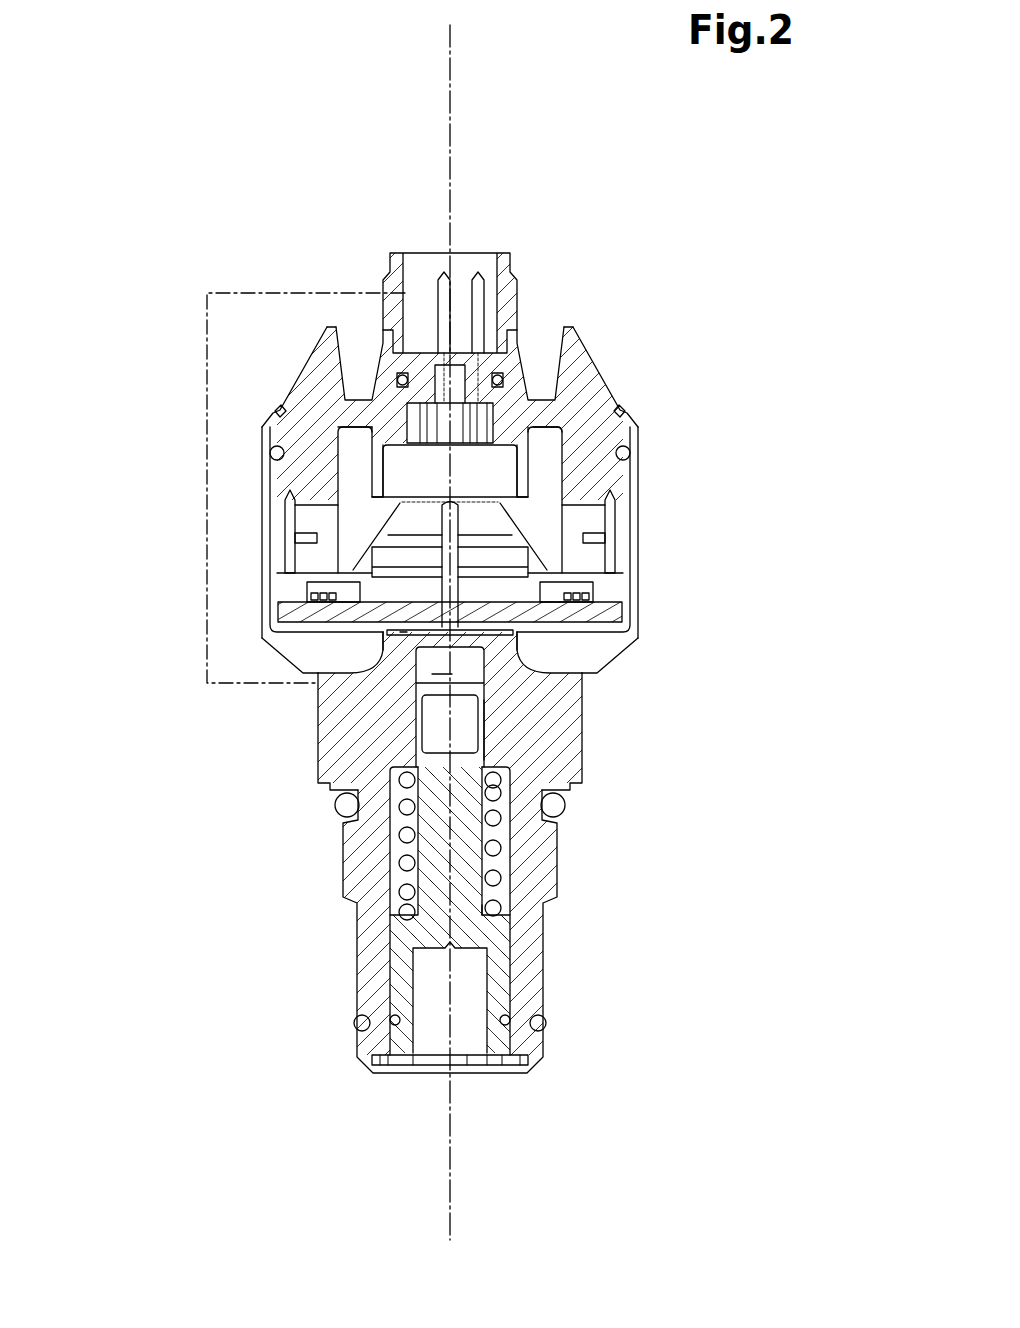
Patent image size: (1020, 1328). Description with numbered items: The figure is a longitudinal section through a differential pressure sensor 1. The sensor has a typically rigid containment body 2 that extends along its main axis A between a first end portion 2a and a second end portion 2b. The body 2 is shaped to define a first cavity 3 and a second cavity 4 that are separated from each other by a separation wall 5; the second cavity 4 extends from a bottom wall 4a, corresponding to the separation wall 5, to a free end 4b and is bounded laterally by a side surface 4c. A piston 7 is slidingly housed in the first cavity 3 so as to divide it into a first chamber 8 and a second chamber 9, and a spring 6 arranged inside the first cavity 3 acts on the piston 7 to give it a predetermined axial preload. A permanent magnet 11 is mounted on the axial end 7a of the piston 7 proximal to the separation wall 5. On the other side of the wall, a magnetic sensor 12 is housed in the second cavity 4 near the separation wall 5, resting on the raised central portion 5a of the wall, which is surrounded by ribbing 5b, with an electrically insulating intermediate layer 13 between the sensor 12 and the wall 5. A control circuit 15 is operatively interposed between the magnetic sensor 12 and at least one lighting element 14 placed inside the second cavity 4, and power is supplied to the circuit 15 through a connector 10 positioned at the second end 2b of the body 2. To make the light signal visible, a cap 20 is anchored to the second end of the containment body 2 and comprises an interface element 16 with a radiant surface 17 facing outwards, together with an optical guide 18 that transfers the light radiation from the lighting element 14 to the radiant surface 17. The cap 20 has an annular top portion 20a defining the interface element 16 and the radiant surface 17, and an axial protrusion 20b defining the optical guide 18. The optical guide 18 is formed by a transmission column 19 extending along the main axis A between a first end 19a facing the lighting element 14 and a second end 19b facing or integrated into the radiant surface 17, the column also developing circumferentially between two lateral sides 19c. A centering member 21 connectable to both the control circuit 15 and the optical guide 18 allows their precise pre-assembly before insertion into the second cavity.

The differential pressure sensor 1 is at (680, 290).
The containment body 2 is at (343, 947).
The first end portion 2a is at (367, 1072).
The second end portion 2b is at (277, 412).
The first cavity 3 is at (400, 821).
The second cavity 4 is at (302, 633).
The bottom wall 4a is at (360, 653).
The free end 4b is at (627, 415).
The side surface 4c is at (290, 583).
The separation wall 5 is at (505, 643).
The raised central portion 5a is at (383, 636).
The ribbing 5b is at (543, 660).
The spring 6 is at (500, 880).
The piston 7 is at (468, 923).
The axial end 7a is at (487, 737).
The first chamber 8 is at (500, 863).
The second chamber 9 is at (450, 707).
The connector 10 is at (503, 250).
The permanent magnet 11 is at (465, 716).
The magnetic sensor 12 is at (450, 625).
The electrically insulating intermediate layer 13 is at (407, 634).
The lighting element 14 is at (285, 575).
The control circuit 15 is at (603, 600).
The interface element 16 is at (553, 340).
The radiant surface 17 is at (318, 352).
The optical guide 18 is at (580, 478).
The transmission column 19 is at (337, 443).
The first end 19a is at (358, 566).
The second end 19b is at (337, 410).
The lateral sides 19c is at (300, 523).
The cap 20 is at (345, 345).
The annular top portion 20a is at (570, 327).
The axial protrusion 20b is at (553, 433).
The centering member 21 is at (613, 527).
The main axis A is at (450, 1222).